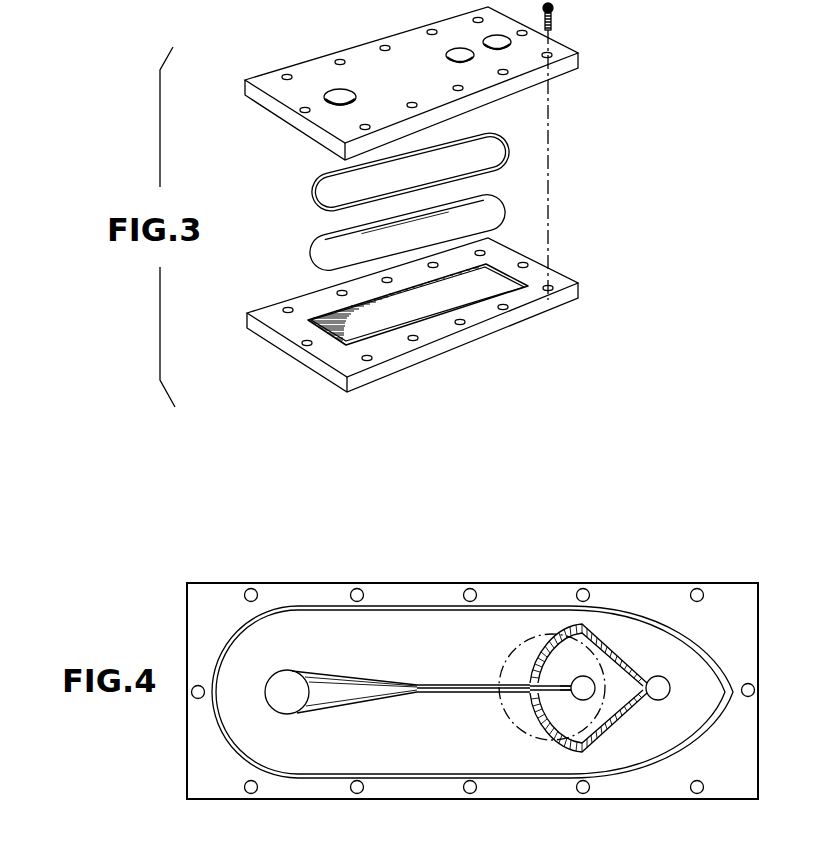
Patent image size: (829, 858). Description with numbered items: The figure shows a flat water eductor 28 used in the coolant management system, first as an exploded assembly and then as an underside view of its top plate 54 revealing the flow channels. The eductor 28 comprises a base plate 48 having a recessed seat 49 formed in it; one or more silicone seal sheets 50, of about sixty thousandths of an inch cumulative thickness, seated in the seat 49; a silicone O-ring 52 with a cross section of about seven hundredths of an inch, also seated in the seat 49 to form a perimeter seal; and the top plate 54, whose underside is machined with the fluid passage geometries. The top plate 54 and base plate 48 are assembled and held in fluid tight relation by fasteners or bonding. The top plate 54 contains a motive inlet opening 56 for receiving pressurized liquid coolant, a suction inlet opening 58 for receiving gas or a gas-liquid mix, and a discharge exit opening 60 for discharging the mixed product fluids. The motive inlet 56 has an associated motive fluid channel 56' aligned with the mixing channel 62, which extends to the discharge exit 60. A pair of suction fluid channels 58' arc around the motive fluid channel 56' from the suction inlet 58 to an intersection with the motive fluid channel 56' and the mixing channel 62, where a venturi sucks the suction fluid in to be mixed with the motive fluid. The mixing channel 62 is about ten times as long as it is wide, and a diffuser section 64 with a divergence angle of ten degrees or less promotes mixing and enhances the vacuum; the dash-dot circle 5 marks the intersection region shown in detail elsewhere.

In FIG. 3, the eductor 28 is at (190, 33).
In FIG. 3, the top plate 54 is at (308, 68).
In FIG. 4, the top plate 54 is at (187, 660).
In FIG. 3, the discharge exit opening 60 is at (334, 91).
In FIG. 4, the discharge exit opening 60 is at (269, 697).
In FIG. 3, the motive inlet opening 56 is at (460, 41).
In FIG. 4, the motive inlet opening 56 is at (575, 673).
In FIG. 3, the suction inlet opening 58 is at (518, 150).
In FIG. 4, the suction inlet opening 58 is at (678, 682).
In FIG. 3, the silicone O-ring 52 is at (315, 185).
In FIG. 3, the silicone seal sheets 50 is at (317, 252).
In FIG. 3, the recessed seat 49 is at (487, 283).
In FIG. 3, the base plate 48 is at (298, 302).
In FIG. 4, the diffuser section 64 is at (352, 696).
In FIG. 4, the mixing channel 62 is at (460, 696).
In FIG. 4, the detail area 5 is at (517, 652).
In FIG. 4, the motive fluid channel 56' is at (567, 710).
In FIG. 4, the suction fluid channels 58' is at (608, 688).